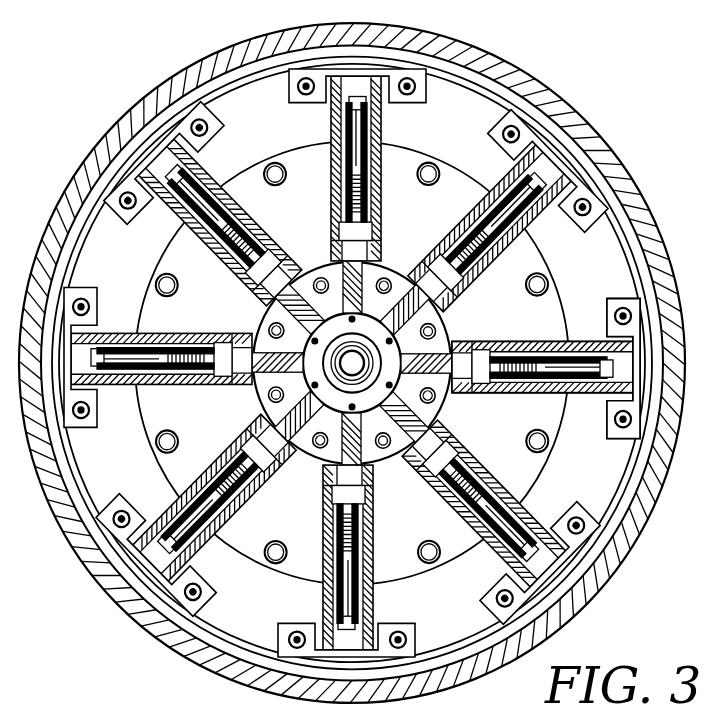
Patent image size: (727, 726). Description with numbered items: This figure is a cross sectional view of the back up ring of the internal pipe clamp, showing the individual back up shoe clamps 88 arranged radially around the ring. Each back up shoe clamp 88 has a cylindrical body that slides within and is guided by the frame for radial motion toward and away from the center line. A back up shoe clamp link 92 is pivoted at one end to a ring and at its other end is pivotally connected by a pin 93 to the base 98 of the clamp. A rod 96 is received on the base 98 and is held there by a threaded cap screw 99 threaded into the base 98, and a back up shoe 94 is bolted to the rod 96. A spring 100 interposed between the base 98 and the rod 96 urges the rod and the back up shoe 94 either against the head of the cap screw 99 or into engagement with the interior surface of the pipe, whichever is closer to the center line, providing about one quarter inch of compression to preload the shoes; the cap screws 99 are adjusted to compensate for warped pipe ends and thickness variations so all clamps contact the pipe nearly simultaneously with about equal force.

The back up shoe clamp 88 is at (578, 413).
The back up shoe clamp link 92 is at (453, 341).
The pin 93 is at (479, 384).
The back up shoe 94 is at (636, 301).
The rod 96 is at (599, 412).
The base 98 is at (522, 341).
The threaded cap screw 99 is at (601, 343).
The spring 100 is at (560, 394).